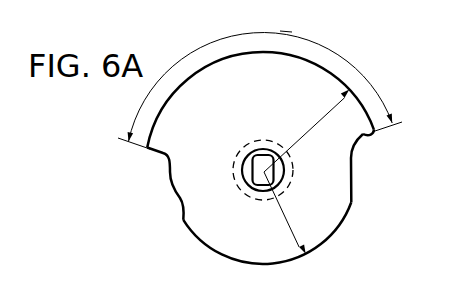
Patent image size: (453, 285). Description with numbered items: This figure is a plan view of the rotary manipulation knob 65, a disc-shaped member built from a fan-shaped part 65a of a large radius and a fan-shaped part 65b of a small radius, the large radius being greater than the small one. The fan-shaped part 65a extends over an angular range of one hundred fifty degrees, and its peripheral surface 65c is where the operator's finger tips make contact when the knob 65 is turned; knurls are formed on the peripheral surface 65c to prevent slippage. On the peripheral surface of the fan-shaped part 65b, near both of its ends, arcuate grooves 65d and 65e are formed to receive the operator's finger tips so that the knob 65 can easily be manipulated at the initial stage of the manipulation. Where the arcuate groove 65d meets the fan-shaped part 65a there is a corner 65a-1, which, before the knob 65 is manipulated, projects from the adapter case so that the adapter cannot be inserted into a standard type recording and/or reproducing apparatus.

The rotary manipulation knob 65 is at (347, 39).
The fan-shaped part of large radius R1 65a is at (330, 78).
The corner of the fan-shaped part 65a-1 is at (370, 136).
The fan-shaped part of small radius R2 65b is at (334, 237).
The peripheral surface 65c is at (197, 72).
The arcuate groove 65d is at (352, 169).
The arcuate groove 65e is at (176, 192).